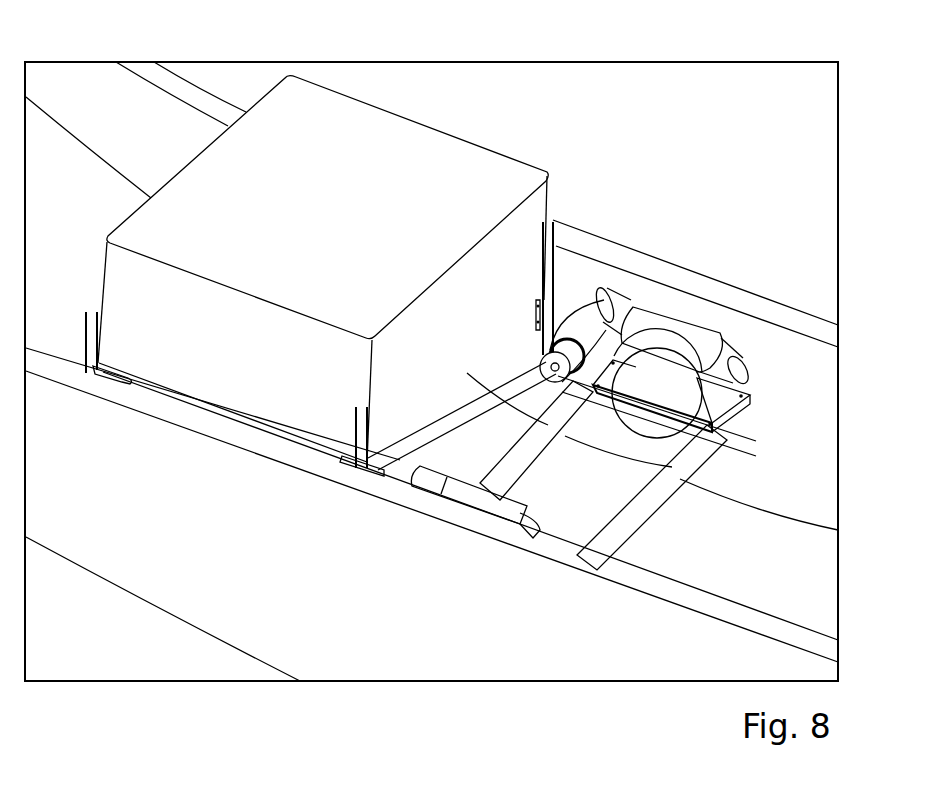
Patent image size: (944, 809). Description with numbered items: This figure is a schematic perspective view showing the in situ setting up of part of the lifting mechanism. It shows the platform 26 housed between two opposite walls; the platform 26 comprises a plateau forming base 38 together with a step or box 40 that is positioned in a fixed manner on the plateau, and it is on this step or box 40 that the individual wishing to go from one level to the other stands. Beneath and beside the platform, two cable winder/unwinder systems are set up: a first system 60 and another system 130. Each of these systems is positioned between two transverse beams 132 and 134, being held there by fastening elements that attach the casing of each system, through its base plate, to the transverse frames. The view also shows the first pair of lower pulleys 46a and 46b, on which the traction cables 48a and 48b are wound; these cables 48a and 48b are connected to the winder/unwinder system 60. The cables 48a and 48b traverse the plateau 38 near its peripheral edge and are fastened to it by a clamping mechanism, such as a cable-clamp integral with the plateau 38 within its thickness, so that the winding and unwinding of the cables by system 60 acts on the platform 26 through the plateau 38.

The platform 26 is at (422, 104).
The step or box 40 is at (470, 168).
The traction cable 48a is at (561, 259).
The traction cable 48b is at (541, 258).
The lower pulley 46a is at (619, 303).
The lower pulley 46b is at (546, 352).
The cable winder/unwinder system 60 is at (678, 308).
The plateau forming base 38 is at (437, 407).
The transverse beam 132 is at (570, 441).
The transverse beam 134 is at (660, 498).
The cable winder/unwinder system 130 is at (471, 498).